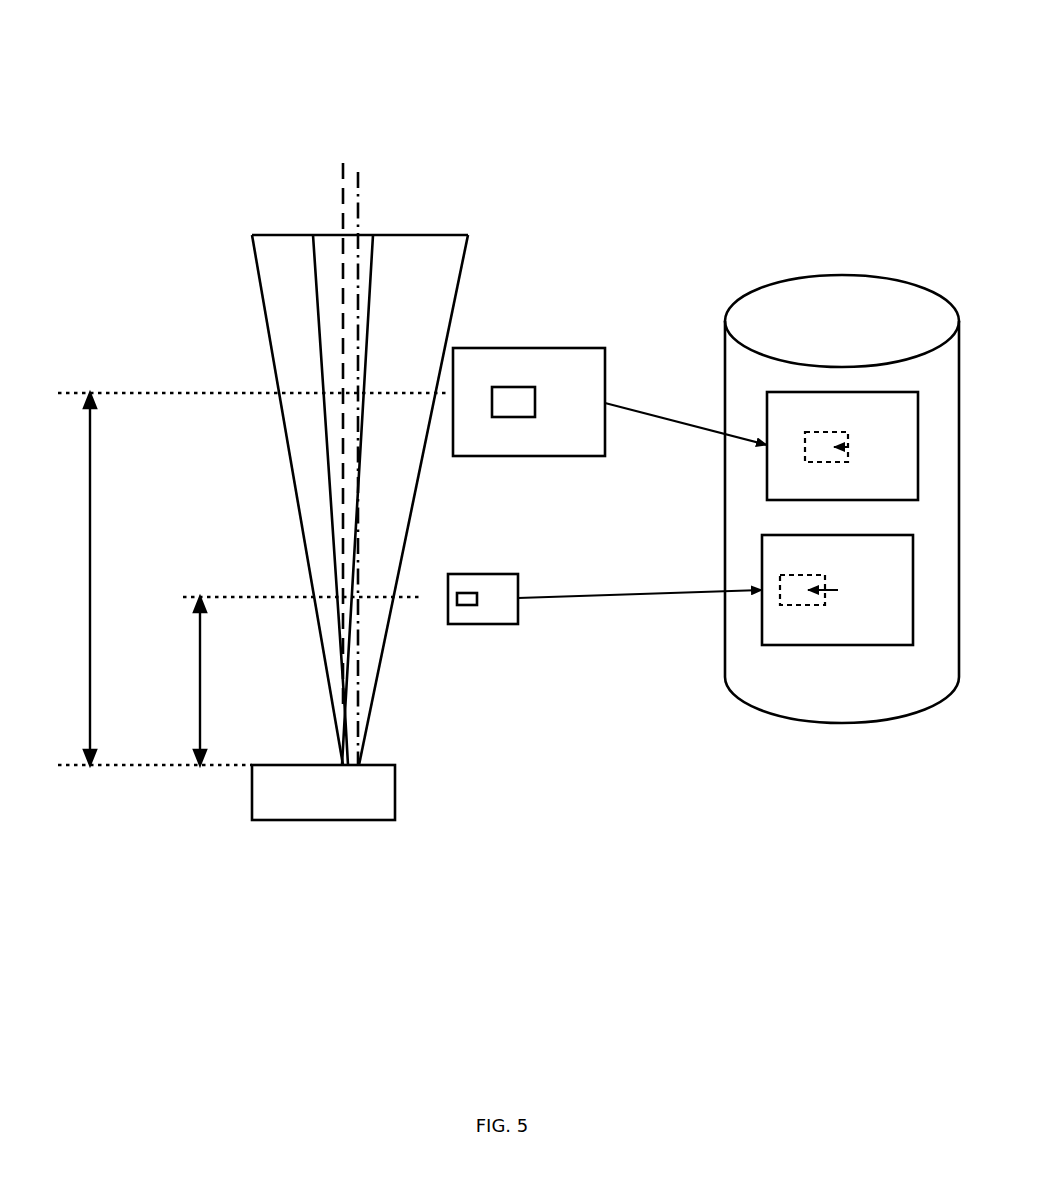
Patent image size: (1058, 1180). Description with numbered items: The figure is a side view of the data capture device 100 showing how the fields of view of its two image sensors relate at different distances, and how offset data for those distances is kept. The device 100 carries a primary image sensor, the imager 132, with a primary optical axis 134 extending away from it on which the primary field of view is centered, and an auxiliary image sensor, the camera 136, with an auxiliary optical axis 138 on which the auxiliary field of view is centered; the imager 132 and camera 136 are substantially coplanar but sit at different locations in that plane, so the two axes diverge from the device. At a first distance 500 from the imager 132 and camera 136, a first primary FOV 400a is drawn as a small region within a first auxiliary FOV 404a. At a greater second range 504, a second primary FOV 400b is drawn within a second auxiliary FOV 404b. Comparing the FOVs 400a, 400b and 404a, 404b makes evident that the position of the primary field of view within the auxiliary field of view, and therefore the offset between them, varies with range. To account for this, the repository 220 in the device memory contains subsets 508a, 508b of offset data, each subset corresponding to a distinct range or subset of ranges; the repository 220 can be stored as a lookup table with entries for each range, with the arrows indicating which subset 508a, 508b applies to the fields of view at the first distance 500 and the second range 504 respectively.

The data capture device 100 is at (323, 792).
The primary image sensor 132 is at (343, 763).
The primary optical axis 134 is at (343, 160).
The auxiliary image sensor 136 is at (358, 763).
The auxiliary optical axis 138 is at (358, 170).
The repository 220 is at (843, 726).
The first primary FOV 400a is at (468, 606).
The second primary FOV 400b is at (512, 418).
The first auxiliary FOV 404a is at (468, 573).
The second auxiliary FOV 404b is at (548, 347).
The first distance 500 is at (286, 681).
The second range 504 is at (246, 579).
The first subset of offset data 508a is at (837, 646).
The second subset of offset data 508b is at (842, 391).